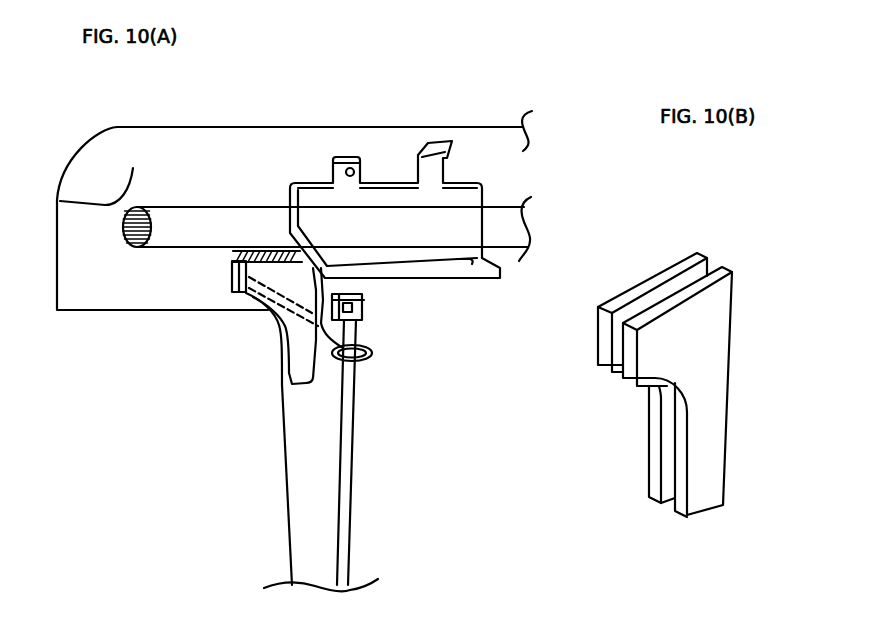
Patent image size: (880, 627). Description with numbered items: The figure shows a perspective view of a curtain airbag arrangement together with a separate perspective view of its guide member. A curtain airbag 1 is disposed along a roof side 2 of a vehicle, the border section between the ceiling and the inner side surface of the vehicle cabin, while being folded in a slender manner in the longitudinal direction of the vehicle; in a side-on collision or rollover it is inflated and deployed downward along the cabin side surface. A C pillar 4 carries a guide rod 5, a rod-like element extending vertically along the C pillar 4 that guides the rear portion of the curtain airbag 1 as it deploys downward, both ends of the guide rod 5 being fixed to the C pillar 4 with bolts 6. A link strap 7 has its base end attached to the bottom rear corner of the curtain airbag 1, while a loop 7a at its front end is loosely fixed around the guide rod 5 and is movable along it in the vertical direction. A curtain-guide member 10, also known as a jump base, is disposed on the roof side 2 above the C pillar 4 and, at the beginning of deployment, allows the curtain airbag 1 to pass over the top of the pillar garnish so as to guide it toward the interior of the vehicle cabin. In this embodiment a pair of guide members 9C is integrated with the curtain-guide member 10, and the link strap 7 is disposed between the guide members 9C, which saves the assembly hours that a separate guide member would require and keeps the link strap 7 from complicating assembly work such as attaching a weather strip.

In FIG. 10A, the curtain airbag 1 is at (190, 224).
In FIG. 10A, the roof side 2 is at (58, 201).
In FIG. 10A, the C pillar 4 is at (310, 511).
In FIG. 10A, the guide rod 5 is at (355, 467).
In FIG. 10A, the bolts 6 is at (362, 300).
In FIG. 10A, the link strap 7 is at (228, 250).
In FIG. 10A, the loop 7a is at (372, 355).
In FIG. 10A, the guide members 9C is at (234, 262).
In FIG. 10B, the guide members 9C is at (598, 333).
In FIG. 10A, the curtain-guide member 10 is at (478, 281).